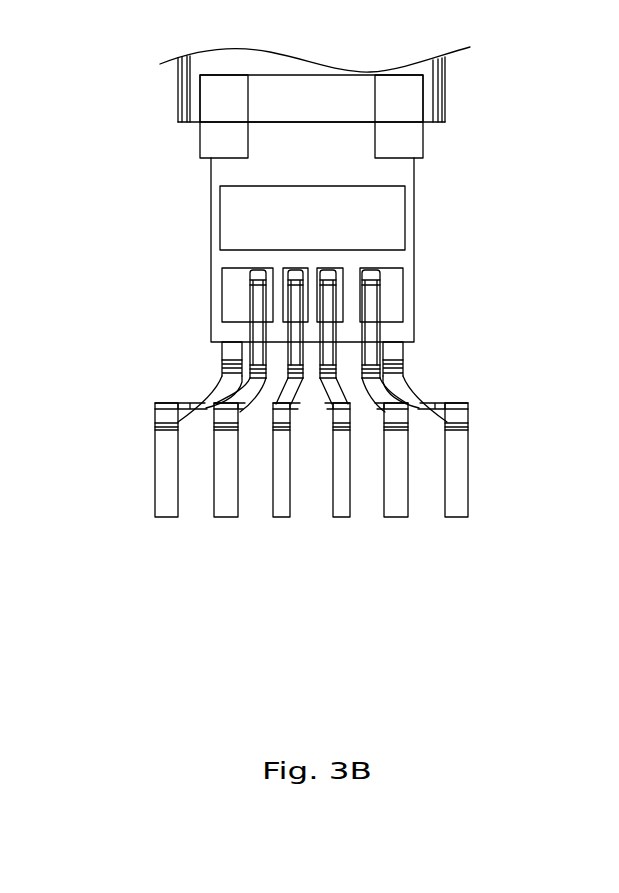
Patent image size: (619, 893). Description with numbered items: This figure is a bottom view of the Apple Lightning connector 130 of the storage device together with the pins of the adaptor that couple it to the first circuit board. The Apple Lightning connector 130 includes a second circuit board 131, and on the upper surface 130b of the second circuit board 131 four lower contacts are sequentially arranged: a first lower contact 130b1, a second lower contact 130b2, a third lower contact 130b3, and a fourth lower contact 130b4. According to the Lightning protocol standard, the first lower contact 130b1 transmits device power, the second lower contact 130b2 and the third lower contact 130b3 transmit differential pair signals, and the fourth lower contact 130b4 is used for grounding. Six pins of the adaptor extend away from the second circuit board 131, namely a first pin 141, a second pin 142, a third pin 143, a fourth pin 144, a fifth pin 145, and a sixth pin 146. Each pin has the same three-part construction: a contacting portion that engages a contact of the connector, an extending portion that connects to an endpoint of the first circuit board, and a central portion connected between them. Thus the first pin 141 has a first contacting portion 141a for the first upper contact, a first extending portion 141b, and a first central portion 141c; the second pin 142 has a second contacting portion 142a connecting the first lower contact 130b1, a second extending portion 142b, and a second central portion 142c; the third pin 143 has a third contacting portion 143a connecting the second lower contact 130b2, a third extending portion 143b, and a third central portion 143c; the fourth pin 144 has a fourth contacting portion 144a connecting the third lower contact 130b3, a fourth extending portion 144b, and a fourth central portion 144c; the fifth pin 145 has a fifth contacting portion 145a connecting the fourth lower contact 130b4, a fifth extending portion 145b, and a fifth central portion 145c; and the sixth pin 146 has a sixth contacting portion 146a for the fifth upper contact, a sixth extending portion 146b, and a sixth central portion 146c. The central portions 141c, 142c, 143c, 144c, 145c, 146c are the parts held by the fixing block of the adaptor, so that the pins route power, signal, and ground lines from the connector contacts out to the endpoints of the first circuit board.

The Apple Lightning connector 130 is at (218, 62).
The second circuit board 131 is at (211, 175).
The upper surface 130b is at (312, 244).
The first lower contact 130b1 is at (387, 294).
The second lower contact 130b2 is at (340, 268).
The third lower contact 130b3 is at (287, 268).
The fourth lower contact 130b4 is at (238, 294).
The first pin 141 is at (497, 429).
The first contacting portion 141a is at (390, 352).
The first extending portion 141b is at (458, 445).
The first central portion 141c is at (420, 407).
The second pin 142 is at (461, 448).
The second contacting portion 142a is at (403, 392).
The second extending portion 142b is at (403, 505).
The second central portion 142c is at (393, 404).
The third pin 143 is at (407, 491).
The third contacting portion 143a is at (333, 355).
The third extending portion 143b is at (343, 534).
The third central portion 143c is at (335, 408).
The fourth pin 144 is at (216, 491).
The fourth contacting portion 144a is at (292, 355).
The fourth extending portion 144b is at (280, 505).
The fourth central portion 144c is at (285, 408).
The fifth pin 145 is at (164, 448).
The fifth contacting portion 145a is at (222, 392).
The fifth extending portion 145b is at (222, 505).
The fifth central portion 145c is at (232, 404).
The sixth pin 146 is at (125, 429).
The sixth contacting portion 146a is at (230, 352).
The sixth extending portion 146b is at (163, 445).
The sixth central portion 146c is at (200, 407).